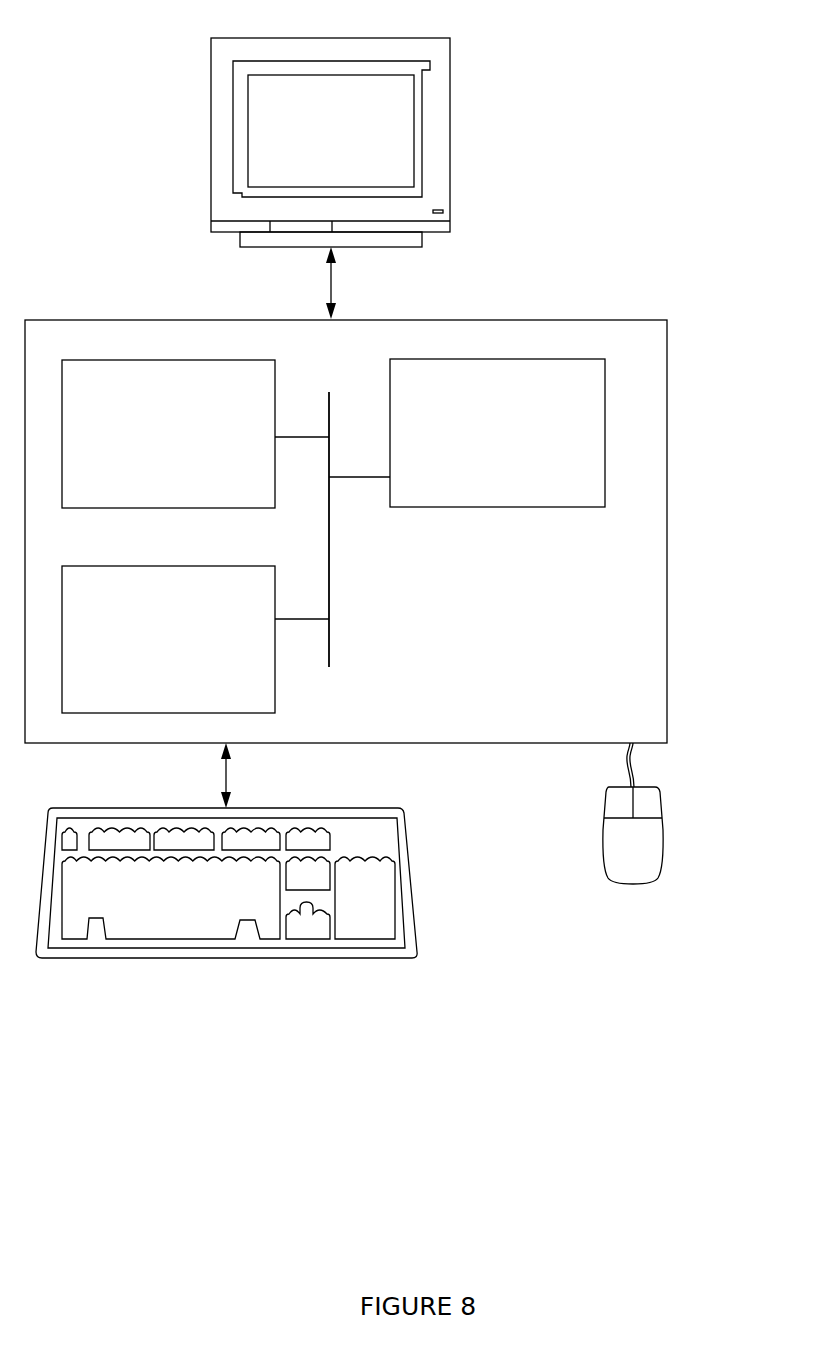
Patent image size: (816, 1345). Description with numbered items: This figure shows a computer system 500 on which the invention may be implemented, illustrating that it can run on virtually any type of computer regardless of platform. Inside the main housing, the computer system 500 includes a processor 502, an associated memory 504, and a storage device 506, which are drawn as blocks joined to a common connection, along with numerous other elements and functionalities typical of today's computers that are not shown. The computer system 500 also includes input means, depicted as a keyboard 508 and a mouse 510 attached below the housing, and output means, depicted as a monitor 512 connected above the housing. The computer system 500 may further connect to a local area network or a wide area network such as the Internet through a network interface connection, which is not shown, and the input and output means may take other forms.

The computer system 500 is at (648, 194).
The processor 502 is at (493, 444).
The memory 504 is at (148, 446).
The storage device 506 is at (148, 651).
The keyboard 508 is at (142, 921).
The mouse 510 is at (613, 856).
The monitor 512 is at (311, 147).